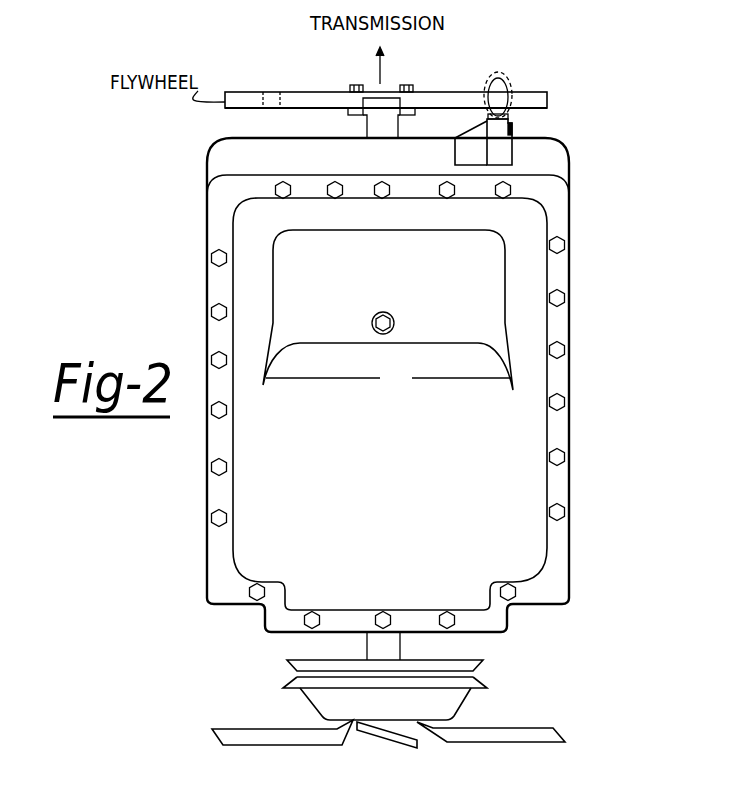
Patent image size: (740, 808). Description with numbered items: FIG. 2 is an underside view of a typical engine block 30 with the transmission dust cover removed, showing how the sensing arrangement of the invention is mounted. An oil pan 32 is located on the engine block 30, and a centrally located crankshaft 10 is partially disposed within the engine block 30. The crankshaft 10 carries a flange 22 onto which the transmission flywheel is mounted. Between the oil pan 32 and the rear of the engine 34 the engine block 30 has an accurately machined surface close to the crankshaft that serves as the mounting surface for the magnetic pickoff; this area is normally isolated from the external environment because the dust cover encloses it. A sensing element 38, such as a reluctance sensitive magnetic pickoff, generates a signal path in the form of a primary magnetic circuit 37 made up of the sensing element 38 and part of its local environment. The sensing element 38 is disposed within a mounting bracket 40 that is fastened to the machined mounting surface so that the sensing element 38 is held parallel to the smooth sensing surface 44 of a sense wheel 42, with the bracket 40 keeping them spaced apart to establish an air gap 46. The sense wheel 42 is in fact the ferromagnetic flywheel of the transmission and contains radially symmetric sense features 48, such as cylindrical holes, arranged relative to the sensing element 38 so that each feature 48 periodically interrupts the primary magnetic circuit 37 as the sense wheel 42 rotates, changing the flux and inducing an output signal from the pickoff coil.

The crankshaft 10 is at (381, 112).
The flange 22 is at (347, 110).
The engine block 30 is at (558, 556).
The oil pan 32 is at (460, 315).
The rear of the engine 34 is at (343, 172).
The primary magnetic circuit 37 is at (513, 83).
The sensing element 38 is at (510, 114).
The mounting bracket 40 is at (497, 154).
The sense wheel 42 is at (484, 53).
The sensing surface 44 is at (438, 108).
The air gap 46 is at (477, 112).
The sense features 48 is at (270, 100).